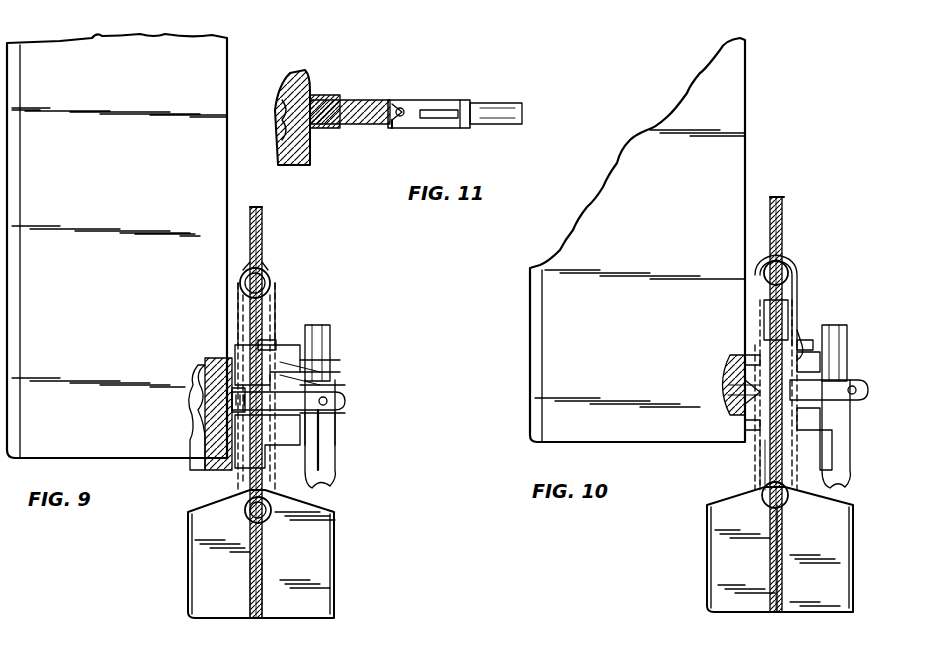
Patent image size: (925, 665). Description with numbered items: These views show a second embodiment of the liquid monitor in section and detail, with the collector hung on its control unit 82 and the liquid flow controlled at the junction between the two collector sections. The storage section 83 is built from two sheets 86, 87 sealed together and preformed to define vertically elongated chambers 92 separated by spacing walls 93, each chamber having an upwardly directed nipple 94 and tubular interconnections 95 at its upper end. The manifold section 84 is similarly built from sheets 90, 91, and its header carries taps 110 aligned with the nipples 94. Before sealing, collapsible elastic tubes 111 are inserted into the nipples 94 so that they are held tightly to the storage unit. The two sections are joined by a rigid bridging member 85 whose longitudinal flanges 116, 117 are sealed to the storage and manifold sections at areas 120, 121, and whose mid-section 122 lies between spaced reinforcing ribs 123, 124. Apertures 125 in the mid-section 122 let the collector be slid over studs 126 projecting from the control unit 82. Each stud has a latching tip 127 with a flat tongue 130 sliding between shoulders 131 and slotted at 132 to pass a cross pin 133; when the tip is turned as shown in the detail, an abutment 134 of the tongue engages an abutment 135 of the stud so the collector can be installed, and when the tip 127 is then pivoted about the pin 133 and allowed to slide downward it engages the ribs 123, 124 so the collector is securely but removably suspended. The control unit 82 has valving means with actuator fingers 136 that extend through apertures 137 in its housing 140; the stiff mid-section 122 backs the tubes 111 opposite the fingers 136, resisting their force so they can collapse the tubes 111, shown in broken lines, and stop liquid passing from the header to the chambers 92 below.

In FIG. 11, the control unit 82 is at (337, 67).
In FIG. 9, the storage section 83 is at (352, 606).
In FIG. 10, the storage section 83 is at (716, 573).
In FIG. 9, the manifold section 84 is at (286, 268).
In FIG. 10, the manifold section 84 is at (796, 232).
In FIG. 9, the bridging member 85 is at (290, 337).
In FIG. 10, the bridging member 85 is at (812, 336).
In FIG. 9, the sheet 86 is at (322, 560).
In FIG. 10, the sheet 86 is at (853, 522).
In FIG. 9, the sheet 87 is at (200, 556).
In FIG. 10, the sheet 87 is at (710, 522).
In FIG. 9, the sheet 90 is at (264, 230).
In FIG. 10, the sheet 90 is at (784, 201).
In FIG. 9, the sheet 91 is at (252, 215).
In FIG. 10, the sheet 91 is at (770, 202).
In FIG. 9, the chambers 92 is at (334, 516).
In FIG. 9, the spacing walls 93 is at (250, 595).
In FIG. 10, the nipples 94 is at (802, 478).
In FIG. 9, the tubular interconnections 95 is at (247, 517).
In FIG. 10, the tubular interconnections 95 is at (770, 505).
In FIG. 10, the taps 110 is at (797, 265).
In FIG. 9, the collapsible elastic tubes 111 is at (248, 370).
In FIG. 10, the collapsible elastic tubes 111 is at (790, 302).
In FIG. 10, the longitudinal flange 116 is at (800, 330).
In FIG. 10, the longitudinal flange 117 is at (795, 458).
In FIG. 10, the sealing area 120 is at (762, 332).
In FIG. 10, the sealing area 121 is at (768, 440).
In FIG. 10, the mid-section 122 is at (835, 380).
In FIG. 9, the reinforcing rib 123 is at (310, 362).
In FIG. 9, the reinforcing rib 124 is at (335, 444).
In FIG. 9, the apertures 125 is at (232, 365).
In FIG. 9, the studs 126 is at (318, 401).
In FIG. 11, the studs 126 is at (358, 100).
In FIG. 9, the latching tips 127 is at (330, 328).
In FIG. 11, the latching tips 127 is at (515, 103).
In FIG. 10, the latching tips 127 is at (847, 331).
In FIG. 9, the flat tongue 130 is at (332, 465).
In FIG. 11, the flat tongue 130 is at (448, 126).
In FIG. 9, the shoulders 131 is at (335, 390).
In FIG. 11, the shoulders 131 is at (418, 100).
In FIG. 9, the slot 132 is at (330, 428).
In FIG. 11, the slot 132 is at (445, 110).
In FIG. 9, the cross pin 133 is at (345, 401).
In FIG. 11, the cross pin 133 is at (400, 116).
In FIG. 11, the abutment 134 is at (392, 124).
In FIG. 11, the abutment 135 is at (398, 104).
In FIG. 10, the actuator fingers 136 is at (732, 395).
In FIG. 10, the apertures 137 is at (732, 360).
In FIG. 9, the housing 140 is at (160, 200).
In FIG. 11, the housing 140 is at (298, 160).
In FIG. 10, the housing 140 is at (675, 245).